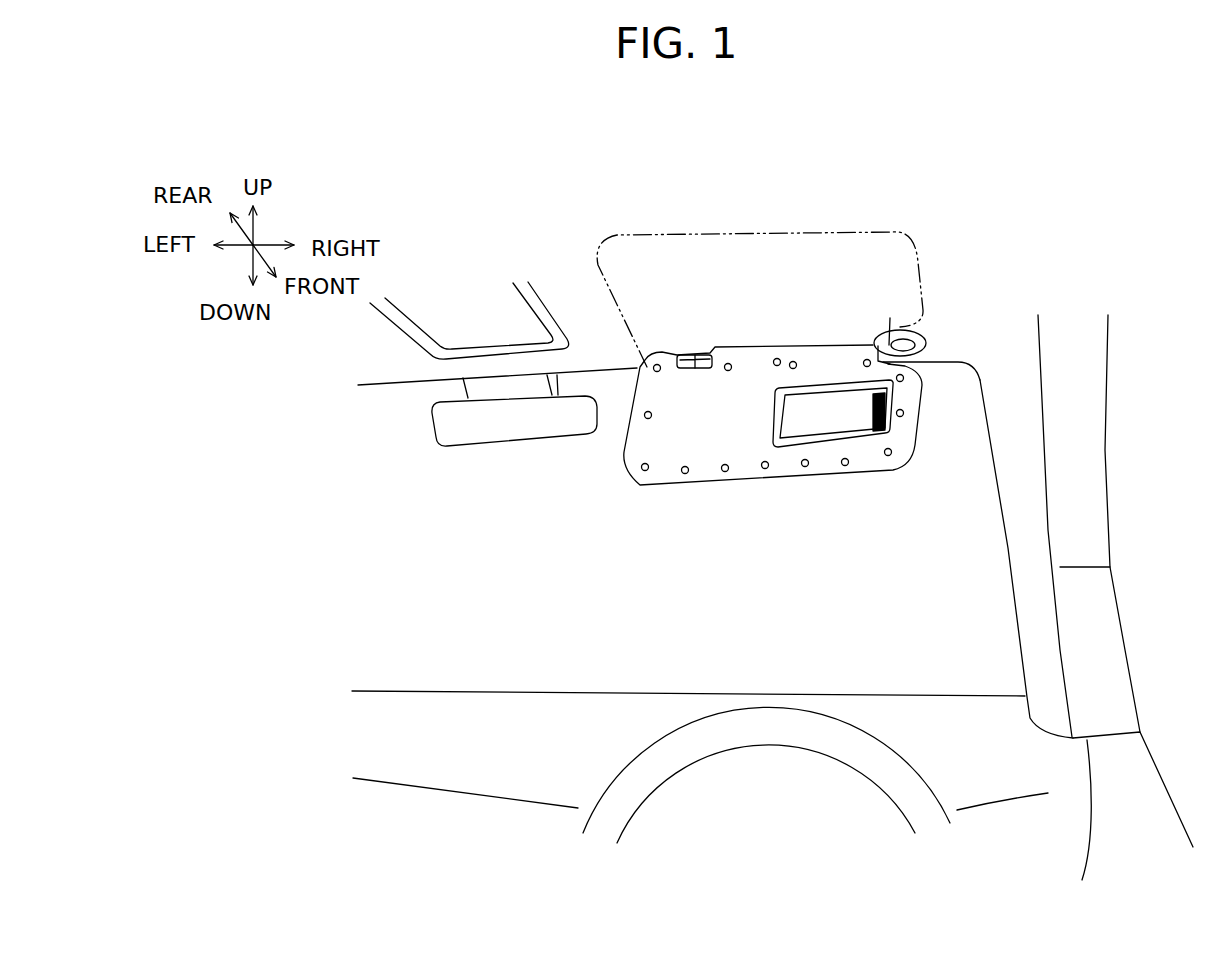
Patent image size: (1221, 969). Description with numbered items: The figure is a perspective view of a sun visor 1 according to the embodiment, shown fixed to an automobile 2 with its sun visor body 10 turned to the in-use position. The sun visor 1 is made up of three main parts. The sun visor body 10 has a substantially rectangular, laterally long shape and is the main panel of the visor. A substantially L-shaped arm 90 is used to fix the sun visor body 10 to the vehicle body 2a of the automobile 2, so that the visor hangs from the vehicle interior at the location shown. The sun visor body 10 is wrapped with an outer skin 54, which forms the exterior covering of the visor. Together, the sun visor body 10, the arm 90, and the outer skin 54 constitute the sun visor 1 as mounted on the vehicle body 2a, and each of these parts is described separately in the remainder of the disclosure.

The sun visor 1 is at (908, 190).
The sun visor body 10 is at (826, 364).
The outer skin 54 is at (748, 384).
The arm 90 is at (892, 348).
The automobile 2 is at (1003, 258).
The vehicle body 2a is at (947, 343).